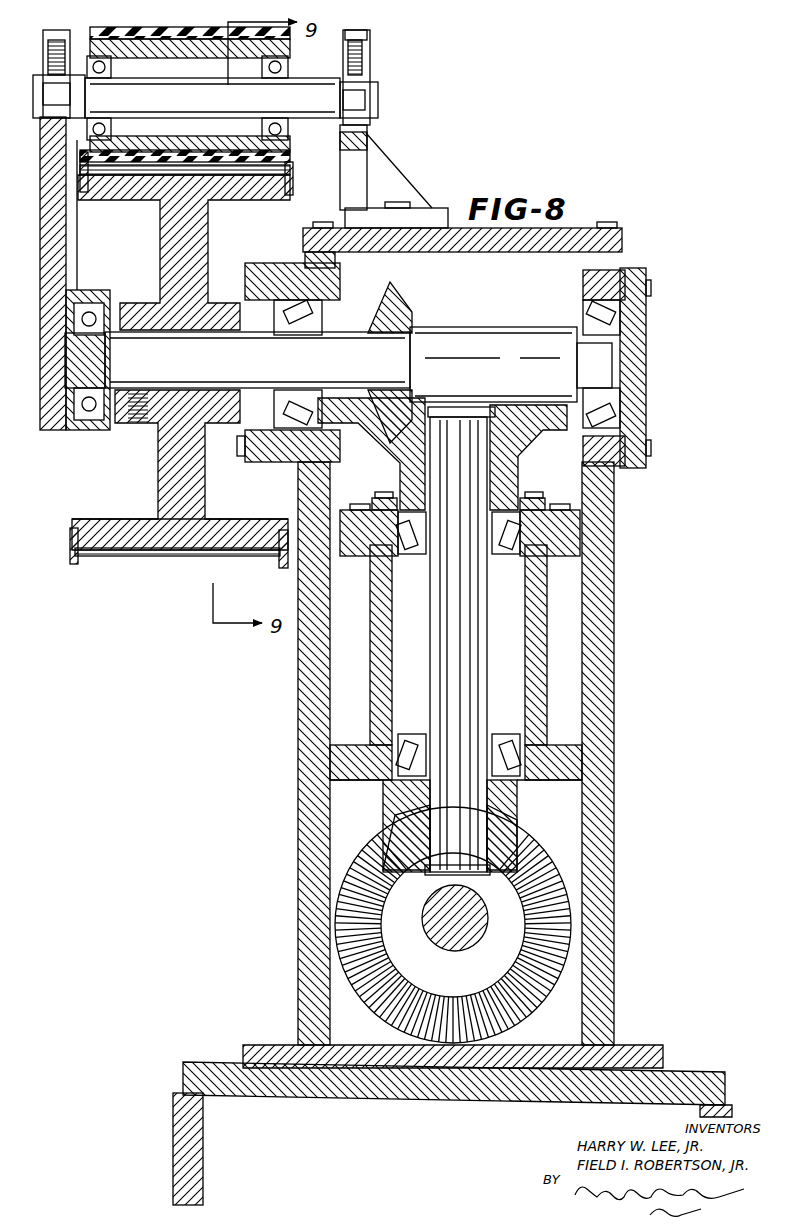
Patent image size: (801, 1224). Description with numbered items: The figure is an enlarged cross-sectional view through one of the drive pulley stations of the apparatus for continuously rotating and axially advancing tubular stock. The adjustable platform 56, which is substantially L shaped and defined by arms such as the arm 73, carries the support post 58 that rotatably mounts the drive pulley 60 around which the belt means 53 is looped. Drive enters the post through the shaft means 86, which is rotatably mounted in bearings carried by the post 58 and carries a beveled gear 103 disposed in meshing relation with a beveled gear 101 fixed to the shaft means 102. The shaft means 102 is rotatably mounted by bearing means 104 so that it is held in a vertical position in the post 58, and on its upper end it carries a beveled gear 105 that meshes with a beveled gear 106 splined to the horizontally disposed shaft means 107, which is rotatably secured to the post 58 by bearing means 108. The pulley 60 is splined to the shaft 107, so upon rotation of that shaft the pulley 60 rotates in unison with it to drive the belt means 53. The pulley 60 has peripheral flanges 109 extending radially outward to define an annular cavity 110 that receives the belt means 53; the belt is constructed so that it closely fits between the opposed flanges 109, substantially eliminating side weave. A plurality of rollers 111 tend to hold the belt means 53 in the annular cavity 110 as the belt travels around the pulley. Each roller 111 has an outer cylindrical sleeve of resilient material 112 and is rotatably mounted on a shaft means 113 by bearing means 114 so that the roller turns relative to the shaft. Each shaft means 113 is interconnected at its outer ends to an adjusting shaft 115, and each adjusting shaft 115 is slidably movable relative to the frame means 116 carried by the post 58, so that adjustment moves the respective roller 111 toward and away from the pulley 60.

The belt means 53 is at (228, 178).
The adjustable platform 56 is at (170, 1093).
The support post 58 is at (300, 695).
The drive pulley 60 is at (255, 530).
The arm 73 is at (205, 1062).
The shaft means 86 is at (455, 940).
The beveled gear 101 is at (510, 835).
The shaft means 102 is at (452, 862).
The beveled gear 103 is at (562, 938).
The bearing means 104 is at (508, 535).
The beveled gear 105 is at (410, 440).
The beveled gear 106 is at (393, 305).
The shaft means 107 is at (500, 338).
The bearing means 108 is at (598, 312).
The peripheral flanges 109 is at (290, 172).
The annular cavity 110 is at (141, 560).
The roller 111 is at (200, 142).
The outer cylindrical sleeve of resilient material 112 is at (172, 33).
The shaft means 113 is at (378, 100).
The bearing means 114 is at (278, 70).
The adjusting shaft 115 is at (372, 58).
The frame means 116 is at (57, 238).